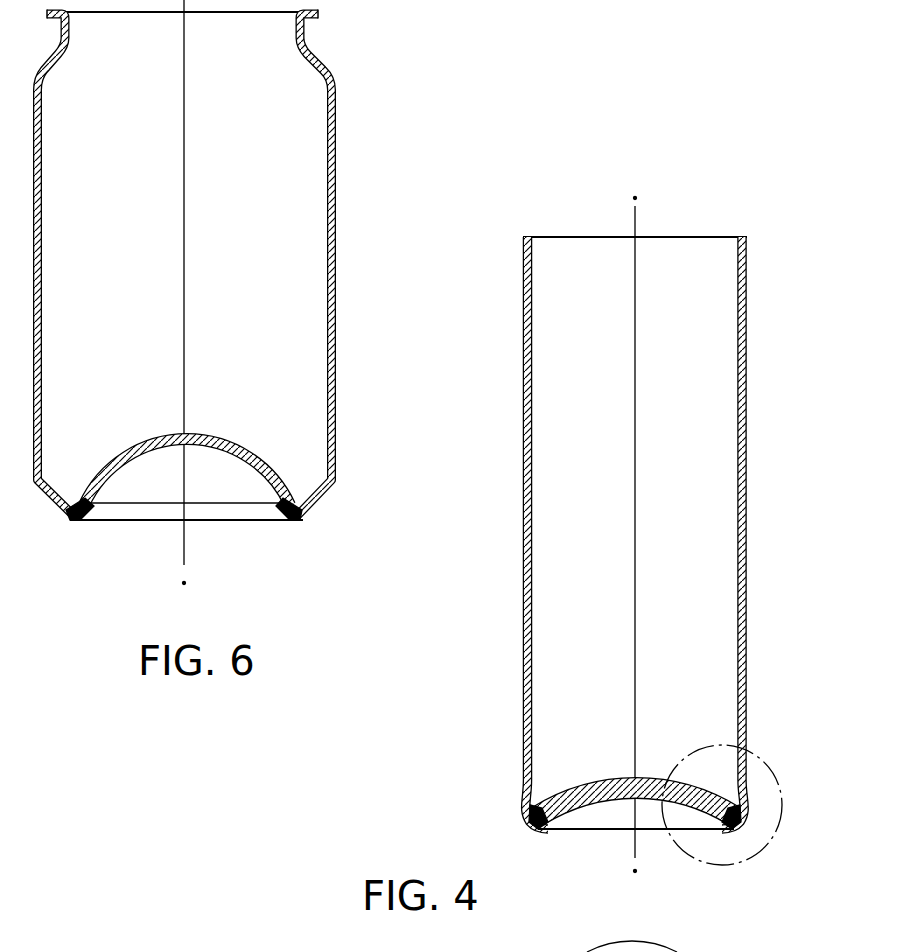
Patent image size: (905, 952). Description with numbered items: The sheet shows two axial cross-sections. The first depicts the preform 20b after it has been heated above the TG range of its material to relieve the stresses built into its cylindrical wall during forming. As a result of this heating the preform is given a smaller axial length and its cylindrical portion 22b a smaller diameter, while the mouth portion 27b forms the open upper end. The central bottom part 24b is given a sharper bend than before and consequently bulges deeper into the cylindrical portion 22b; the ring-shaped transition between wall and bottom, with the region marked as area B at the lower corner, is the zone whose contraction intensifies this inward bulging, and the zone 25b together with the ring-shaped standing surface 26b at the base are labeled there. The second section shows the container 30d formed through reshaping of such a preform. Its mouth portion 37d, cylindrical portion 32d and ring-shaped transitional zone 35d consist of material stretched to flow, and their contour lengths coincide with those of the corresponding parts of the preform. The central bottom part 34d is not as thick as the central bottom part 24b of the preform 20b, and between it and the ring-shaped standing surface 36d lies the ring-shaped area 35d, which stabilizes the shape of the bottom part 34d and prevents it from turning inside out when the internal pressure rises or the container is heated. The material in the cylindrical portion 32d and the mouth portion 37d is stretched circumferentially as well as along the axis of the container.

In FIG. 4, the preform 20b is at (694, 533).
In FIG. 4, the cylindrical portion 22b is at (747, 503).
In FIG. 4, the bottom part 24b is at (588, 782).
In FIG. 4, the heel junction 25b is at (748, 793).
In FIG. 4, the bottom rim 26b is at (738, 856).
In FIG. 4, the mouth portion 27b is at (691, 247).
In FIG. 4, the area B is at (765, 762).
In FIG. 6, the container 30d is at (234, 306).
In FIG. 6, the cylindrical portion 32d is at (336, 305).
In FIG. 6, the central bottom part 34d is at (204, 436).
In FIG. 6, the ring-shaped transitional zone 35d is at (284, 510).
In FIG. 6, the ring-shaped standing surface 36d is at (300, 523).
In FIG. 6, the mouth portion 37d is at (300, 40).